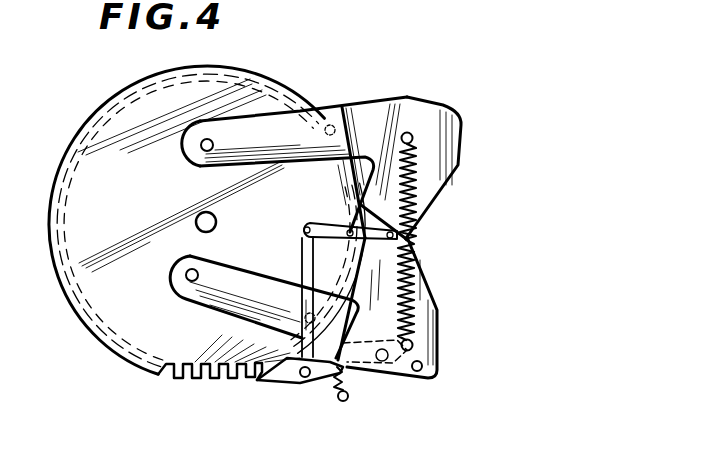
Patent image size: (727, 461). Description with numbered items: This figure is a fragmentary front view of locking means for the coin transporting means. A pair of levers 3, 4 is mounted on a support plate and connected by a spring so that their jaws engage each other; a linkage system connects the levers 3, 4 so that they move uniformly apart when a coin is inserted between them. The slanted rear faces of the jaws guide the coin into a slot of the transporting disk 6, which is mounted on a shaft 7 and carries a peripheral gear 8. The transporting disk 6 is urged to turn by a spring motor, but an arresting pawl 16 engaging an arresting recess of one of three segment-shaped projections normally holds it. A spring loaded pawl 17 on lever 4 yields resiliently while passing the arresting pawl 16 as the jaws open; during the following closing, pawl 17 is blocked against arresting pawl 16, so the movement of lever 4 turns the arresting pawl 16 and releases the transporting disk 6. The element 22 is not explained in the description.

The upper frame member 3 is at (461, 122).
The lower frame member 4 is at (425, 308).
The disc hub 6 is at (101, 275).
The pivot pin 7 is at (208, 222).
The disc 8 is at (113, 104).
The bracket 16 is at (280, 375).
The latch plate 17 is at (366, 376).
The lever 22 is at (434, 1).